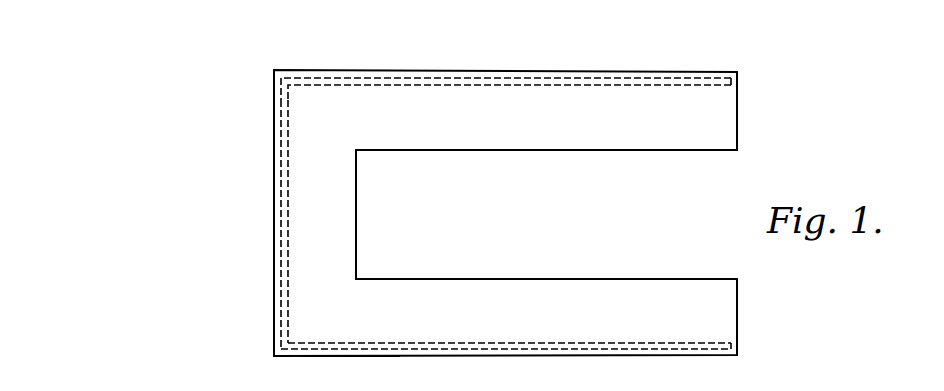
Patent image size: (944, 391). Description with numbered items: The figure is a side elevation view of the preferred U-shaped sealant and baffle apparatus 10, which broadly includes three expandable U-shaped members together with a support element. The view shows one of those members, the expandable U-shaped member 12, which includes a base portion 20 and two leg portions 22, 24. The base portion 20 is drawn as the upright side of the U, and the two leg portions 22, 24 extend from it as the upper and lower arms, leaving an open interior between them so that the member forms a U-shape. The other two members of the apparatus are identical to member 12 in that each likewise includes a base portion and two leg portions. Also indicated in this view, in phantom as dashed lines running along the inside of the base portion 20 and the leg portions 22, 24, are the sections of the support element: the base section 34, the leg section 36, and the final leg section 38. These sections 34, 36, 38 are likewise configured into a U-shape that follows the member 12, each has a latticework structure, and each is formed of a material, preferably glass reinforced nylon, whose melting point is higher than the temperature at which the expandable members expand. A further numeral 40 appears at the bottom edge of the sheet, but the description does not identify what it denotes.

The sealant and baffle apparatus 10 is at (62, 264).
The expandable U-shaped member 12 is at (250, 190).
The base portion 20 is at (305, 228).
The leg portion 22 is at (533, 110).
The leg portion 24 is at (470, 312).
The base section 34 is at (283, 294).
The leg section 36 is at (655, 84).
The leg section 38 is at (668, 348).
The bottom edge 40 is at (350, 373).